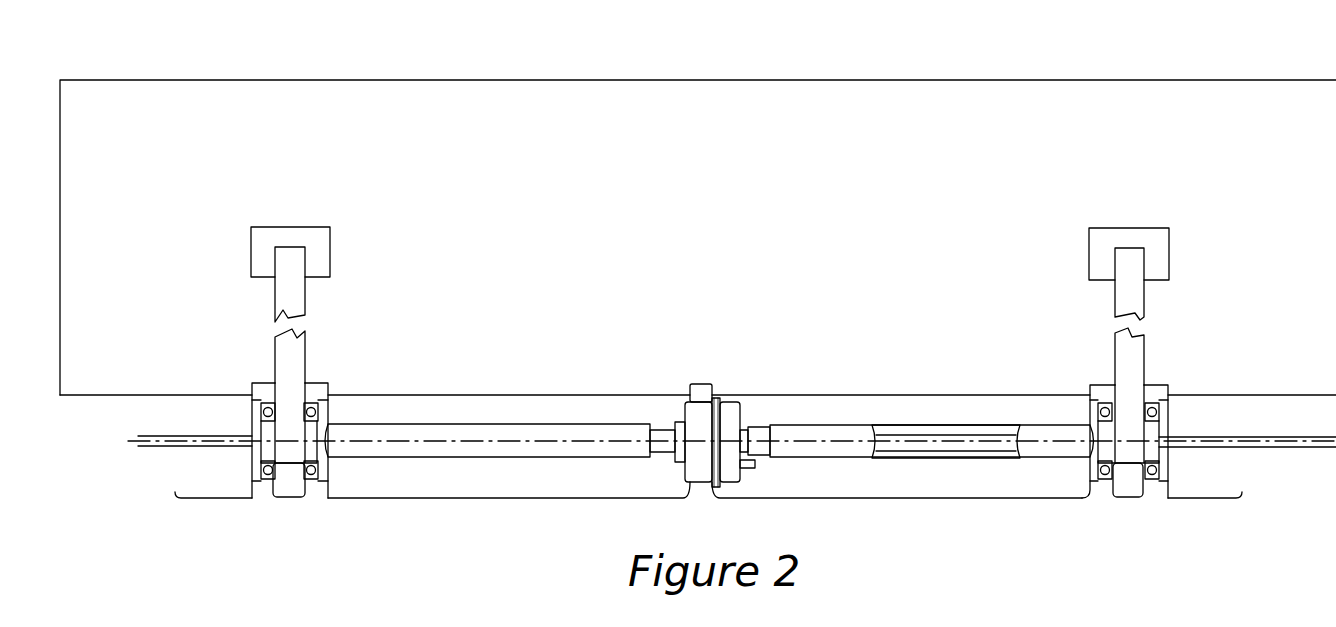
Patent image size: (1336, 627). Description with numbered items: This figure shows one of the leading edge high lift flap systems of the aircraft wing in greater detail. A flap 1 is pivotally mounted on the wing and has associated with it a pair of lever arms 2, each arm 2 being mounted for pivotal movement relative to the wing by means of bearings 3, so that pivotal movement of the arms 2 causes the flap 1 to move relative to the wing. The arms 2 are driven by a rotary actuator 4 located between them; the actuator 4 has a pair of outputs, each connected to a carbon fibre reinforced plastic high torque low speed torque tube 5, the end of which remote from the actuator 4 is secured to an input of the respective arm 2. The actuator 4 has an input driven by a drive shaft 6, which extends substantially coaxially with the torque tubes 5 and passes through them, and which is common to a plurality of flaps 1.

The flap 1 is at (444, 94).
The lever arm 2 is at (287, 392).
The bearing 3 is at (267, 478).
The rotary actuator 4 is at (659, 476).
The torque tube 5 is at (468, 448).
The drive shaft 6 is at (955, 440).